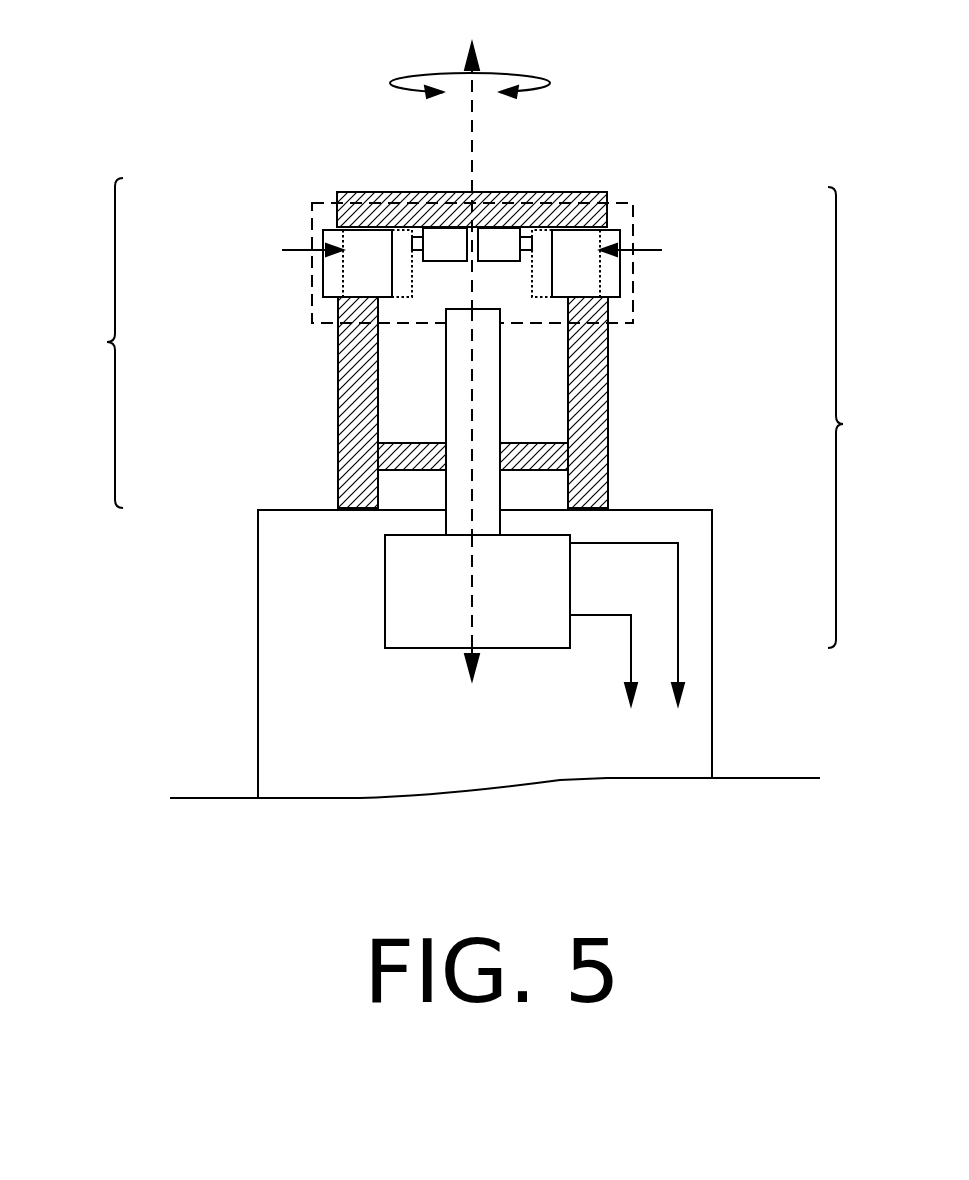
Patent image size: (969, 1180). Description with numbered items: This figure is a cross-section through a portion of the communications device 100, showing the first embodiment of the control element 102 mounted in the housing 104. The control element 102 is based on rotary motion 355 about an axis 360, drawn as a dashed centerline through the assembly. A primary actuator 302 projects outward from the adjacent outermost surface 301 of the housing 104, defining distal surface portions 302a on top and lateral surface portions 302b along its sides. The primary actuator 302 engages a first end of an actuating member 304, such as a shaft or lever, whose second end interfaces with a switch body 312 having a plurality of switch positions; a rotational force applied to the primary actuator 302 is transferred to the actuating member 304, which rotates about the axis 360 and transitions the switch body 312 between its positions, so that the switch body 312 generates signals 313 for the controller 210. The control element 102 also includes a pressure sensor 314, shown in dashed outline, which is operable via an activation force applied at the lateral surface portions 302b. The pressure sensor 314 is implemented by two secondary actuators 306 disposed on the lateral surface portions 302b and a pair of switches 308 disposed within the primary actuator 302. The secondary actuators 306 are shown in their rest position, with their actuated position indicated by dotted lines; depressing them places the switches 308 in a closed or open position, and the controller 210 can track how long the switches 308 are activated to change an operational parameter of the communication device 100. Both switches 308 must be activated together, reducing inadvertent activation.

The communications device 100 is at (172, 645).
The control element 102 is at (863, 441).
The housing 104 is at (308, 600).
The controller 210 is at (637, 746).
The outermost surface 301 is at (282, 508).
The primary actuator 302 is at (67, 351).
The distal surface portions 302a is at (357, 193).
The lateral surface portions 302b is at (608, 407).
The actuating member 304 is at (443, 430).
The secondary actuators 306 is at (325, 228).
The switches 308 is at (442, 192).
The switch body 312 is at (511, 610).
The signals 313 is at (606, 615).
The pressure sensor 314 is at (310, 310).
The rotary motion 355 is at (447, 72).
The axis 360 is at (472, 137).